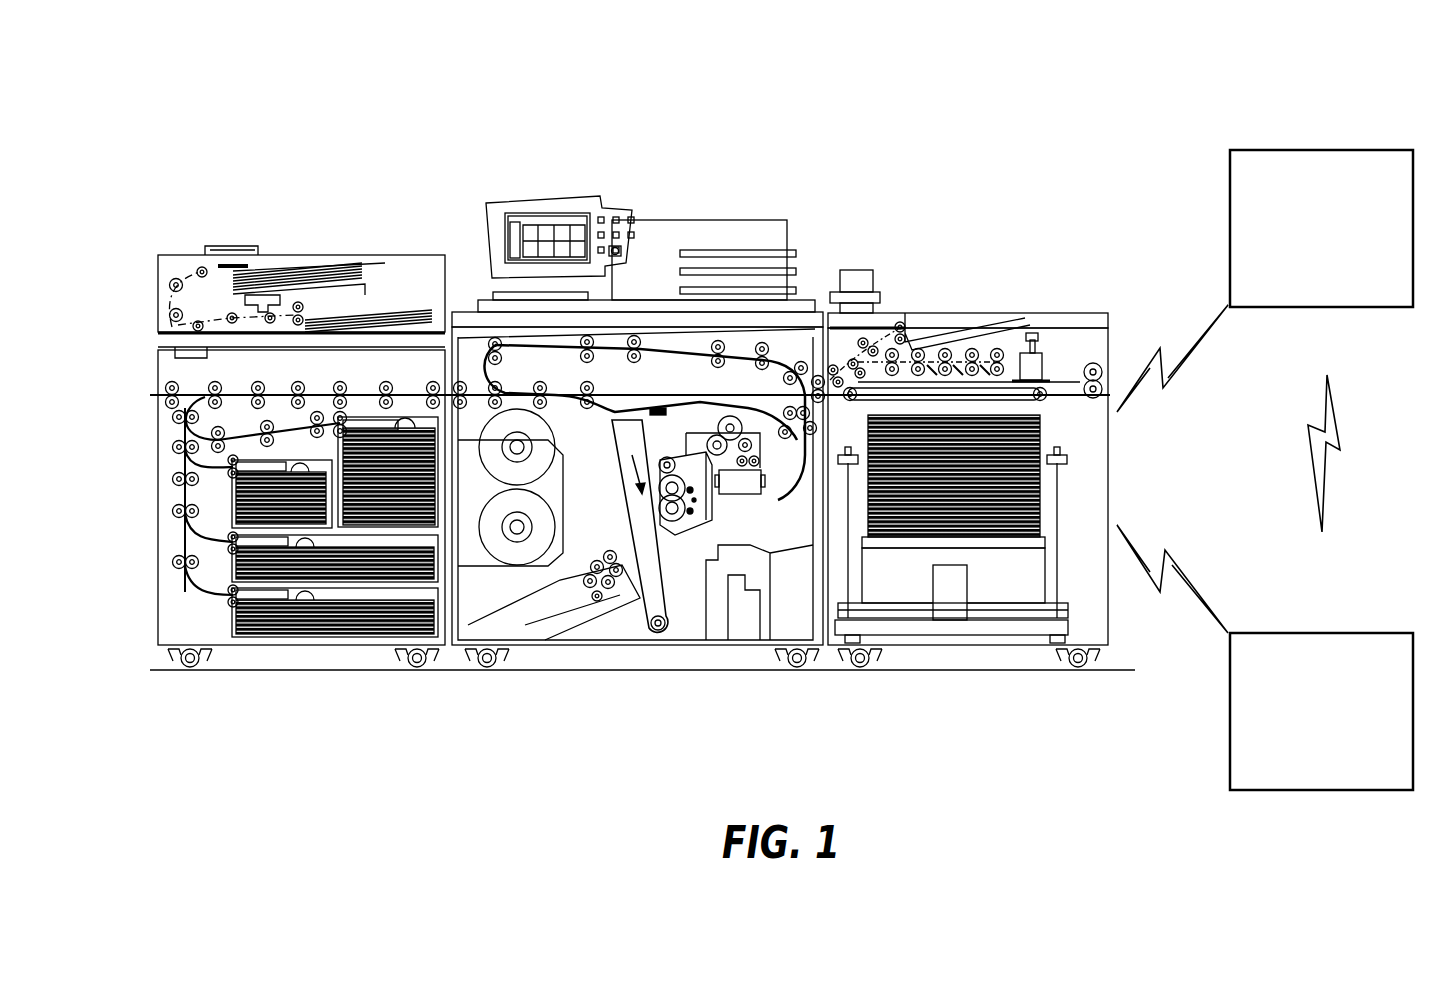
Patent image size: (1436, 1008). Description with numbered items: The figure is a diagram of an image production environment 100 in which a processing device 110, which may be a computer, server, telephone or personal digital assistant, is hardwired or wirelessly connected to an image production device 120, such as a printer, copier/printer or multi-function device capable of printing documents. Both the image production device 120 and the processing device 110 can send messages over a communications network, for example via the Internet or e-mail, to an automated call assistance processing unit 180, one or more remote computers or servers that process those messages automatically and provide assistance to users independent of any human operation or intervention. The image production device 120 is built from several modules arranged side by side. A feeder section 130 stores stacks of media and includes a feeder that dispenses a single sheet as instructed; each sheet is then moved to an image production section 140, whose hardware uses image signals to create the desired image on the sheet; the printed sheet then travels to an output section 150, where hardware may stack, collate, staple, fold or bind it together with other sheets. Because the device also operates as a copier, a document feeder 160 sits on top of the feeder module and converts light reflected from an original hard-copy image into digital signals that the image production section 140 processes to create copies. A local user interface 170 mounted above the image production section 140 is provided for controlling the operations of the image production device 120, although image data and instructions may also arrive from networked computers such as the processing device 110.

The image production environment 100 is at (263, 150).
The processing device 110 is at (1343, 633).
The image production device 120 is at (938, 322).
The feeder section 130 is at (333, 648).
The image production section 140 is at (620, 648).
The output section 150 is at (972, 648).
The document feeder 160 is at (320, 255).
The local user interface 170 is at (706, 220).
The automated call assistance processing unit 180 is at (1343, 150).